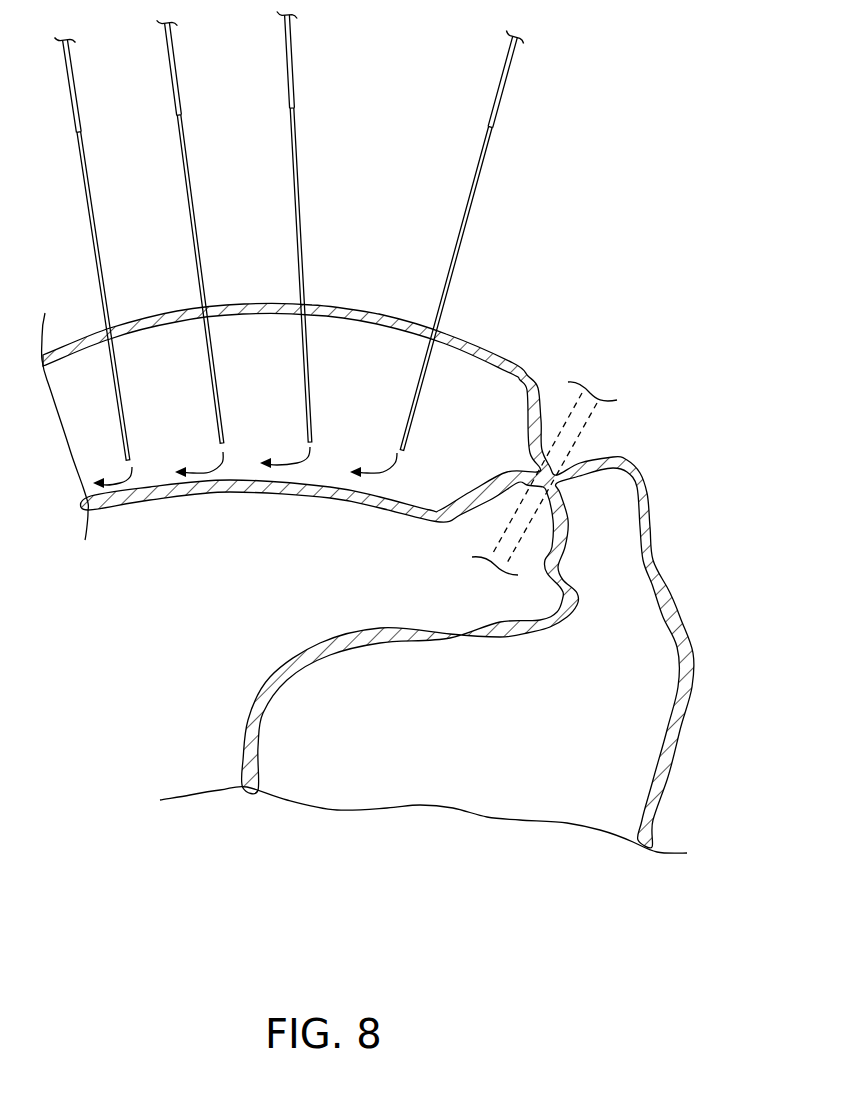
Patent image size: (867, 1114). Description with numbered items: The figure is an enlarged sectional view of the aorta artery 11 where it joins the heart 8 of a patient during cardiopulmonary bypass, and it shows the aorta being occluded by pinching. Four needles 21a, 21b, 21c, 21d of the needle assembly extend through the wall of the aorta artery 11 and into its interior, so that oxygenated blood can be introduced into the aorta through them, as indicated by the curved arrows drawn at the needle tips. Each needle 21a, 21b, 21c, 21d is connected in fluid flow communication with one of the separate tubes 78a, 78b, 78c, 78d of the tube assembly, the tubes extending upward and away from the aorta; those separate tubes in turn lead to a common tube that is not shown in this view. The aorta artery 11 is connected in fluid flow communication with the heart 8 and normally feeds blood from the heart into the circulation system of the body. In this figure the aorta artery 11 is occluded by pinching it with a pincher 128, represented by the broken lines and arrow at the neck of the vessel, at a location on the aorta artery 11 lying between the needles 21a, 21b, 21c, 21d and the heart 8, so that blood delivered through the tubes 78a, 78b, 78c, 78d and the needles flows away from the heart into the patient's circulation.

The tube 78a is at (504, 85).
The tube 78b is at (292, 60).
The tube 78c is at (176, 70).
The tube 78d is at (75, 90).
The needle 21a is at (460, 257).
The needle 21b is at (302, 245).
The needle 21c is at (197, 233).
The needle 21d is at (99, 245).
The aorta artery 11 is at (235, 493).
The pincher 128 is at (612, 432).
The heart 8 is at (456, 840).